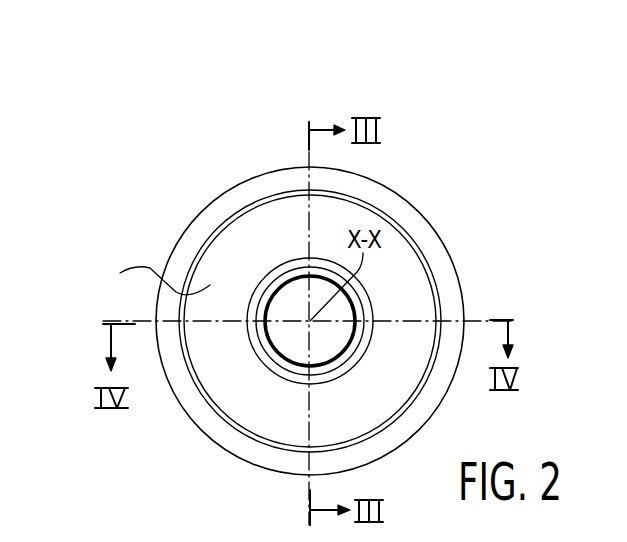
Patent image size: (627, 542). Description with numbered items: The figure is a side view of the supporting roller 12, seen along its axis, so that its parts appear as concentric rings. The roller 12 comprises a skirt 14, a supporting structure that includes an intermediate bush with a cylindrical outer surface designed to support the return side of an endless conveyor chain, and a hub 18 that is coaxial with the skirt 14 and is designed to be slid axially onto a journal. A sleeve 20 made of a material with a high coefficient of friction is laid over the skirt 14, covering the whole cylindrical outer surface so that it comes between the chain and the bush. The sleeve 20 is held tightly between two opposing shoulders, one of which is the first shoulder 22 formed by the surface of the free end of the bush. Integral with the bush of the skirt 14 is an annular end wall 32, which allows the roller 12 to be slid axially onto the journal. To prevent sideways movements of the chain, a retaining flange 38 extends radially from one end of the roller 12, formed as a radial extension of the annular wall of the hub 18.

The supporting roller 12 is at (130, 220).
The skirt 14 is at (223, 222).
The hub 18 is at (283, 362).
The sleeve 20 is at (437, 251).
The first shoulder 22 is at (308, 409).
The end wall 32 is at (150, 275).
The retaining flange 38 is at (211, 423).